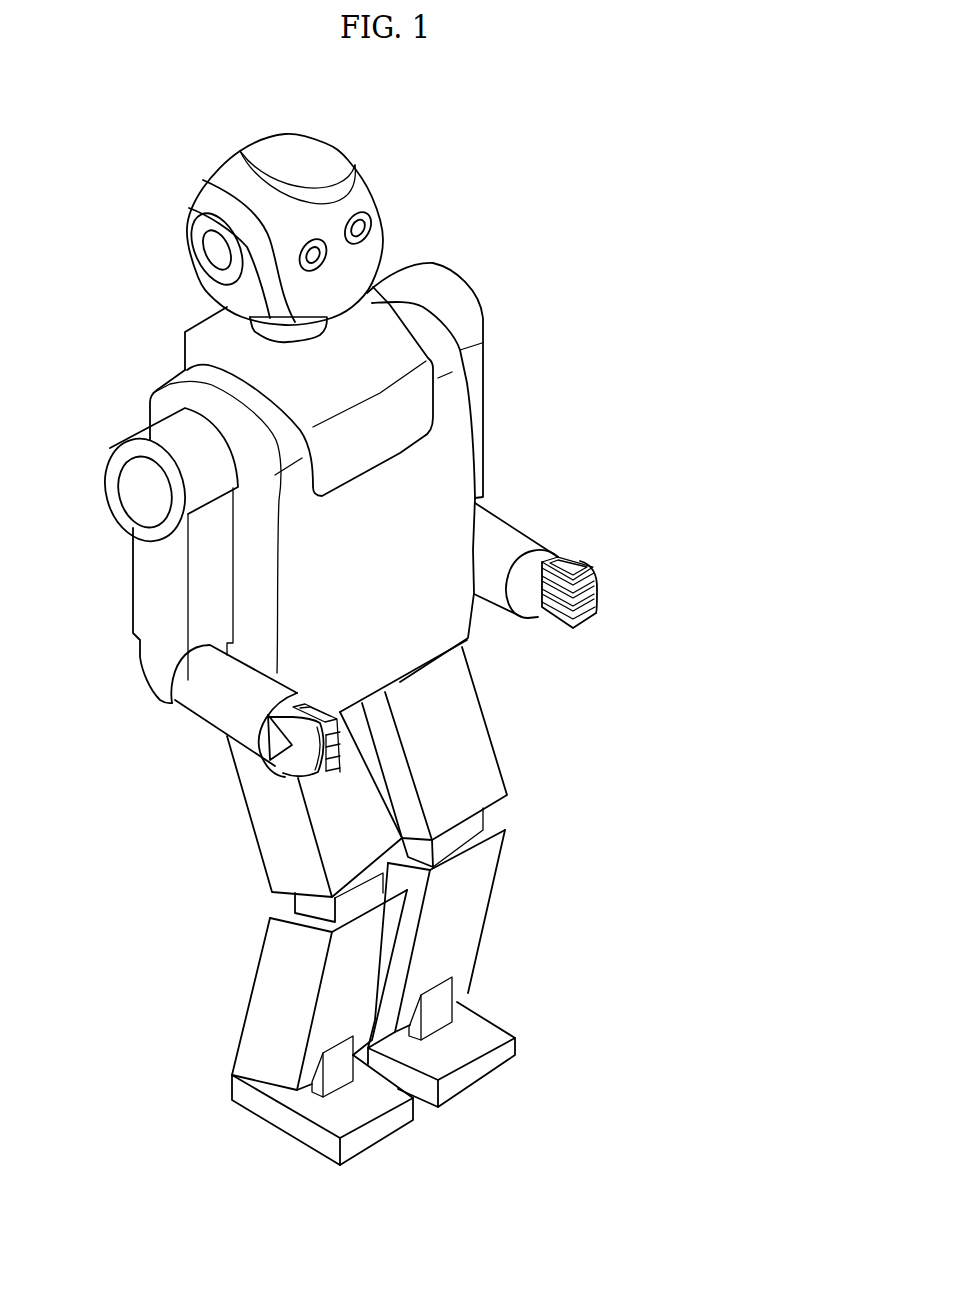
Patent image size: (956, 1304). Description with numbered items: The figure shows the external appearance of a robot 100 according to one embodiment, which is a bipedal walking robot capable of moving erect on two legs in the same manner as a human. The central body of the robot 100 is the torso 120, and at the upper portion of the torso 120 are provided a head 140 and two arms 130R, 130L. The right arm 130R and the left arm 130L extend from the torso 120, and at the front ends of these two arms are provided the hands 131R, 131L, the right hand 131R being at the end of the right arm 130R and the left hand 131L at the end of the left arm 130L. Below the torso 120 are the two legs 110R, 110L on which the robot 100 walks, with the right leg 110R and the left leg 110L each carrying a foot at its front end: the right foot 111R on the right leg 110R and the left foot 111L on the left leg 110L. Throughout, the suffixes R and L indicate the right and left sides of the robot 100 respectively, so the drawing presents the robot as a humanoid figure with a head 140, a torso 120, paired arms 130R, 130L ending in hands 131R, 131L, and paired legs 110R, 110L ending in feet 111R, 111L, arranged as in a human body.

The robot 100 is at (449, 199).
The head 140 is at (365, 183).
The torso 120 is at (423, 473).
The right arm 130R is at (153, 655).
The left arm 130L is at (528, 543).
The right hand 131R is at (293, 760).
The left hand 131L is at (600, 590).
The right leg 110R is at (267, 987).
The left leg 110L is at (477, 913).
The right foot 111R is at (290, 1122).
The left foot 111L is at (508, 1057).